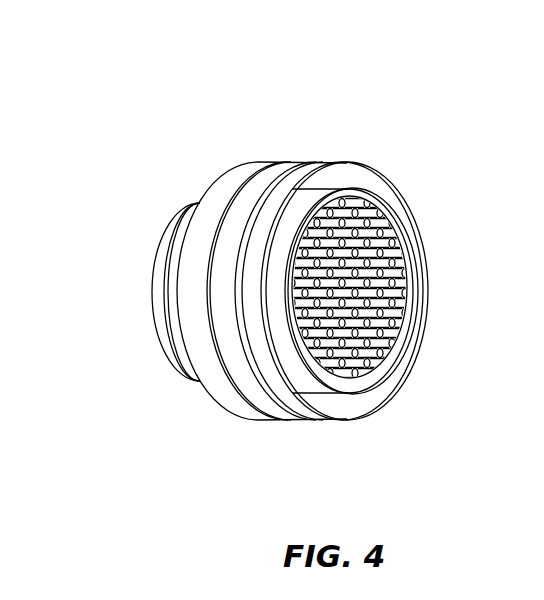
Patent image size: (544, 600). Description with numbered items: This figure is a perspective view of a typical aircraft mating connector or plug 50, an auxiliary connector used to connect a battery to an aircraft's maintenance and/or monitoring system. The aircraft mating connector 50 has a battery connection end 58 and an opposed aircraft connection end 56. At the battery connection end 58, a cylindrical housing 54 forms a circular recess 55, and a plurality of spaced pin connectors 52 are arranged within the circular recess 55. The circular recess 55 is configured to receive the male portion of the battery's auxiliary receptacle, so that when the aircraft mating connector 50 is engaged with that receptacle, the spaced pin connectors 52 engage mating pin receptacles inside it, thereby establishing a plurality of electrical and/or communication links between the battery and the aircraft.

The aircraft mating connector 50 is at (389, 121).
The spaced pin connectors 52 is at (363, 215).
The cylindrical housing 54 is at (300, 408).
The circular recess 55 is at (367, 362).
The aircraft connection end 56 is at (155, 331).
The battery connection end 58 is at (408, 229).